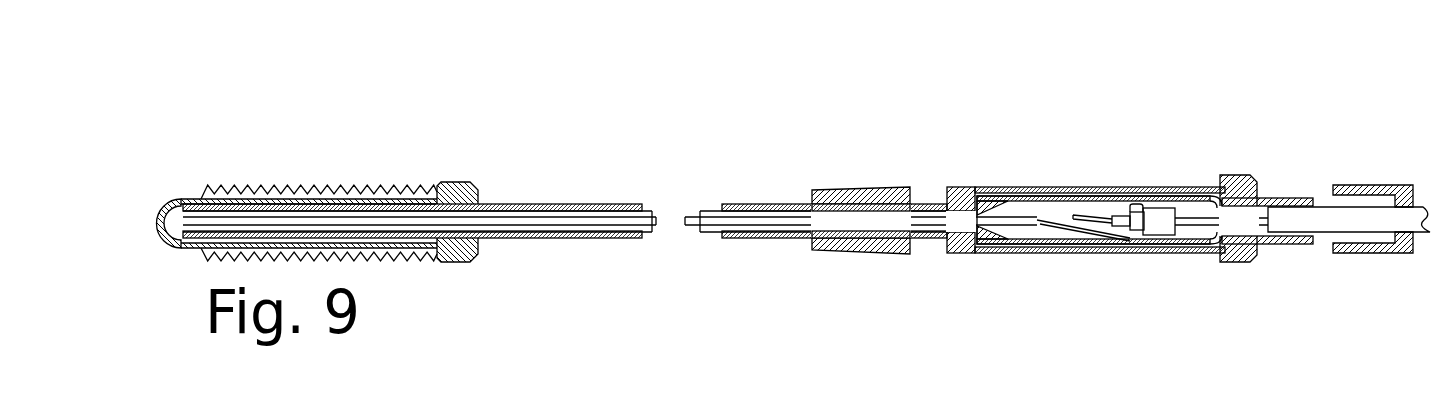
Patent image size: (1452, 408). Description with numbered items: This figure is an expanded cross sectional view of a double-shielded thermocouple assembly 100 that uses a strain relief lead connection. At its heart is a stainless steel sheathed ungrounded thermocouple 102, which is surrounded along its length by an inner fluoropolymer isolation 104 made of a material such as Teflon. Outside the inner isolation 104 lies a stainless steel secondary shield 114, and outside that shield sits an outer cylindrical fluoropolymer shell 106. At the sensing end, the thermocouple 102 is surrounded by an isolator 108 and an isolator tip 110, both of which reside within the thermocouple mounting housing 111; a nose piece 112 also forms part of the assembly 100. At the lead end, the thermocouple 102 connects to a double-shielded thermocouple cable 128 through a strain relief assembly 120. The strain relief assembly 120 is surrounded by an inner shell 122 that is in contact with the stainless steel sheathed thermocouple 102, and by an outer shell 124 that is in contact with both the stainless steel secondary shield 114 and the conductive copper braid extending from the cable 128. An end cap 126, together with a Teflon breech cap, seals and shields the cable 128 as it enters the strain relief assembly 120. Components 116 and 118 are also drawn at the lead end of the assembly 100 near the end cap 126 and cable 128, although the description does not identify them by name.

The double-shielded thermocouple assembly 100 is at (930, 123).
The stainless steel sheathed ungrounded thermocouple 102 is at (657, 228).
The inner fluoropolymer isolation 104 is at (530, 232).
The outer cylindrical fluoropolymer shell 106 is at (580, 206).
The isolator 108 is at (348, 195).
The isolator tip 110 is at (183, 192).
The thermocouple mounting housing 111 is at (460, 263).
The nose piece 112 is at (866, 189).
The stainless steel secondary shield 114 is at (928, 237).
The coupling nut 116 is at (1235, 262).
The collar ring 118 is at (1360, 185).
The strain relief assembly 120 is at (1077, 204).
The inner shell 122 is at (1063, 254).
The outer shell 124 is at (980, 255).
The end cap 126 is at (1284, 244).
The double-shielded thermocouple cable 128 is at (1363, 224).